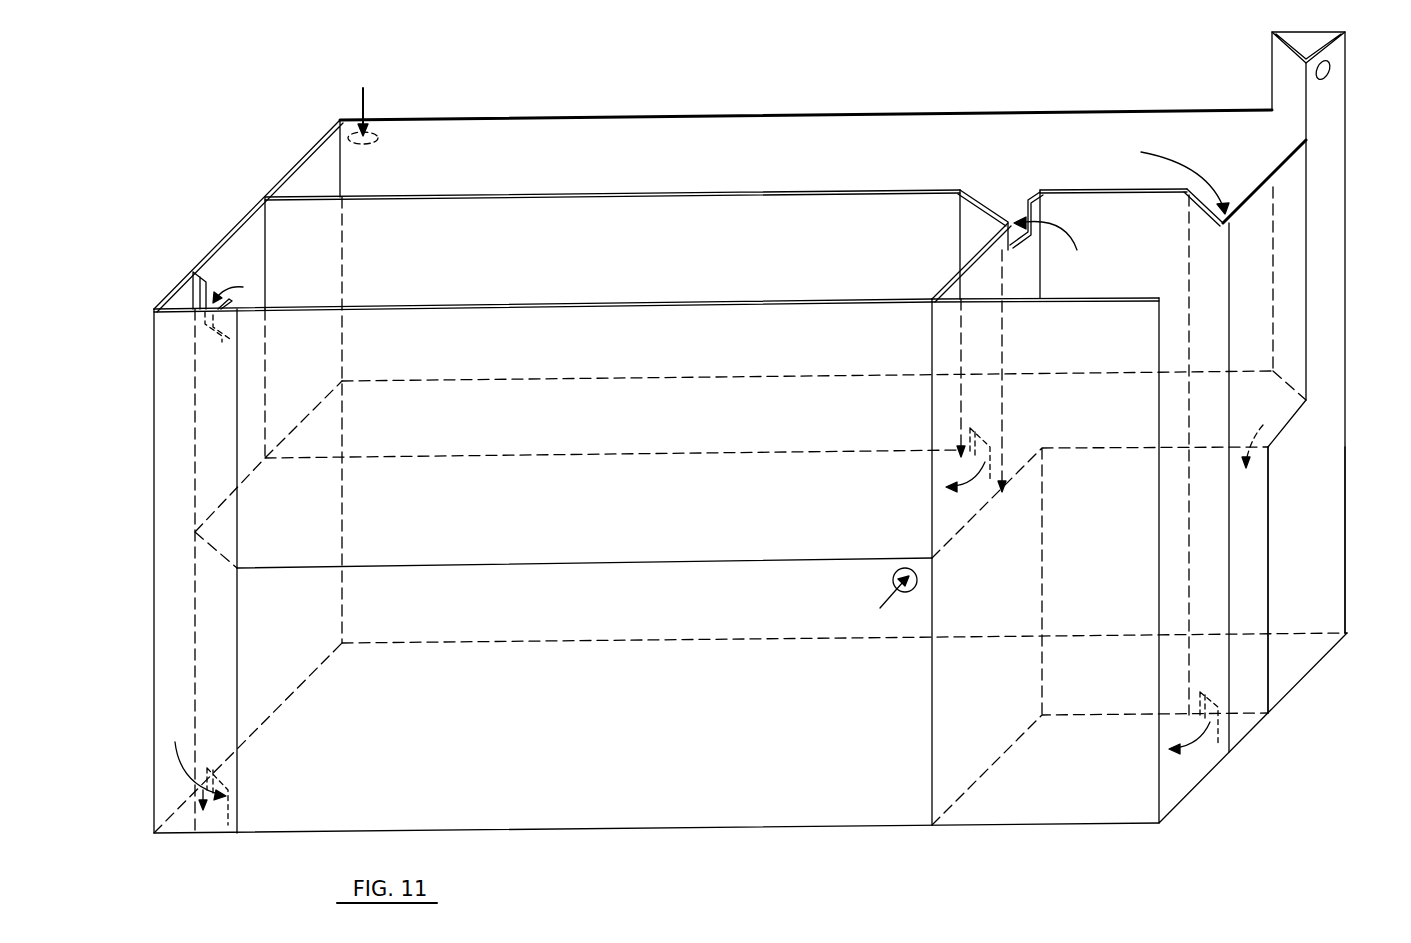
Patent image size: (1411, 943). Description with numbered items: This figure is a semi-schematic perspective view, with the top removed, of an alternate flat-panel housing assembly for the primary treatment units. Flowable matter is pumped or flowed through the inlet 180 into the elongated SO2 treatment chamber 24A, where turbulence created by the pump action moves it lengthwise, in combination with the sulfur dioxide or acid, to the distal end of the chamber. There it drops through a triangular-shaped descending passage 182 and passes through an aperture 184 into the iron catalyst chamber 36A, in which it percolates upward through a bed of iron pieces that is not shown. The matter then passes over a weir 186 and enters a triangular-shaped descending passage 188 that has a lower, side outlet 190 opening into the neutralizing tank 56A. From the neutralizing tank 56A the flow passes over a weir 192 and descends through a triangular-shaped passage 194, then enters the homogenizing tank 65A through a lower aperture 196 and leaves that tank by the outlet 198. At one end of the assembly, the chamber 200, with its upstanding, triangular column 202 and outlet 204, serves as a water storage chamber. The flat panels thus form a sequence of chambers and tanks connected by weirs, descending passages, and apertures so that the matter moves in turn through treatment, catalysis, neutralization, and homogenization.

The SO2 treatment chamber 24A is at (680, 148).
The iron catalyst chamber 36A is at (1052, 790).
The neutralizing tank 56A is at (813, 233).
The homogenizing tank 65A is at (618, 798).
The inlet 180 is at (352, 128).
The triangular-shaped descending passage 182 is at (1245, 672).
The aperture 184 is at (1225, 728).
The weir 186 is at (1027, 235).
The triangular-shaped descending passage 188 is at (1000, 203).
The lower side outlet 190 is at (990, 462).
The weir 192 is at (213, 330).
The triangular-shaped passage 194 is at (183, 300).
The lower aperture 196 is at (228, 800).
The outlet 198 is at (893, 578).
The chamber 200 is at (1308, 474).
The upstanding triangular column 202 is at (1355, 230).
The outlet 204 is at (1333, 78).